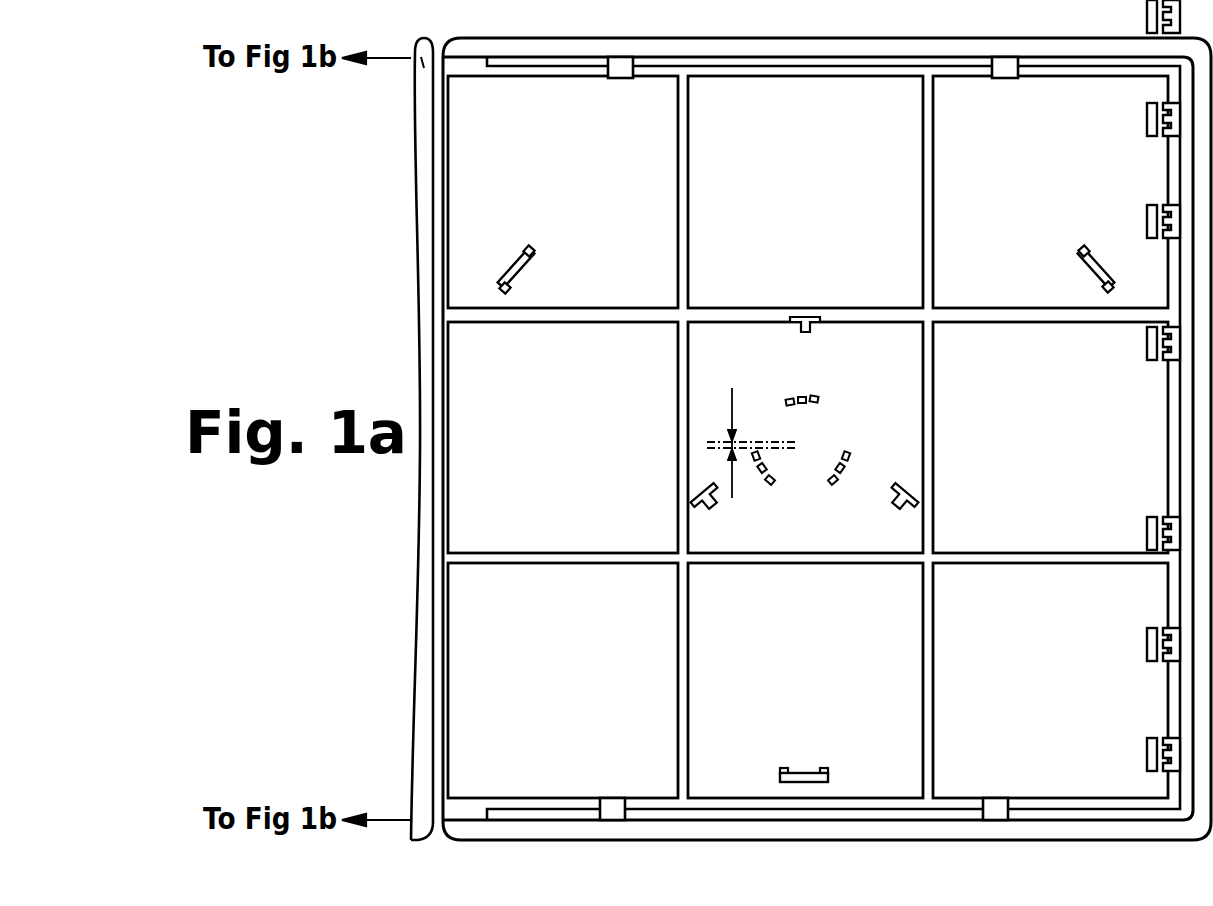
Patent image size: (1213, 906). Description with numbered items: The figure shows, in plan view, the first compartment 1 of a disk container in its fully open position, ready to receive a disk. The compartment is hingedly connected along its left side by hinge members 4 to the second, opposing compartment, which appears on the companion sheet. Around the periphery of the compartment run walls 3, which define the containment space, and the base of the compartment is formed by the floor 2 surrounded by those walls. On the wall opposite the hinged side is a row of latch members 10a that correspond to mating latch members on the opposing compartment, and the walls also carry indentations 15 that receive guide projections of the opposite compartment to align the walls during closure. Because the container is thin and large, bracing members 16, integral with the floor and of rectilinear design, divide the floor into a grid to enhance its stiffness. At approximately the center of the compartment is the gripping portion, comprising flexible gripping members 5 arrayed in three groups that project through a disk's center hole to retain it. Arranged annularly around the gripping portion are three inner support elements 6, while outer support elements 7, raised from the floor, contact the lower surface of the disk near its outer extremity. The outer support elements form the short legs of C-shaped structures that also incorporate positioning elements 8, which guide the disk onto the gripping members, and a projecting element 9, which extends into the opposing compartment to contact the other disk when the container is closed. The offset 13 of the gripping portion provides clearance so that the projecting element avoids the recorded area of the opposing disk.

The first compartment 1 is at (865, 57).
The floor 2 is at (820, 184).
The walls 3 is at (770, 78).
The hinge members 4 is at (412, 45).
The flexible gripping members 5 is at (818, 398).
The support elements 6 is at (805, 317).
The support elements 7 is at (530, 256).
The positioning element 8 is at (505, 265).
The projecting element 9 is at (790, 770).
The latch members 10a is at (1150, 340).
The offset 13 is at (752, 425).
The indentations 15 is at (620, 79).
The bracing members 16 is at (682, 642).